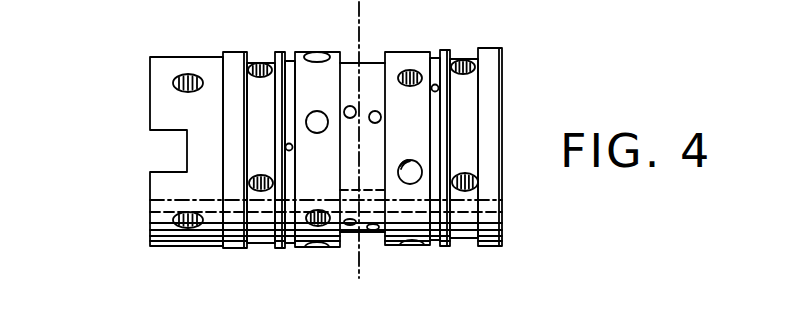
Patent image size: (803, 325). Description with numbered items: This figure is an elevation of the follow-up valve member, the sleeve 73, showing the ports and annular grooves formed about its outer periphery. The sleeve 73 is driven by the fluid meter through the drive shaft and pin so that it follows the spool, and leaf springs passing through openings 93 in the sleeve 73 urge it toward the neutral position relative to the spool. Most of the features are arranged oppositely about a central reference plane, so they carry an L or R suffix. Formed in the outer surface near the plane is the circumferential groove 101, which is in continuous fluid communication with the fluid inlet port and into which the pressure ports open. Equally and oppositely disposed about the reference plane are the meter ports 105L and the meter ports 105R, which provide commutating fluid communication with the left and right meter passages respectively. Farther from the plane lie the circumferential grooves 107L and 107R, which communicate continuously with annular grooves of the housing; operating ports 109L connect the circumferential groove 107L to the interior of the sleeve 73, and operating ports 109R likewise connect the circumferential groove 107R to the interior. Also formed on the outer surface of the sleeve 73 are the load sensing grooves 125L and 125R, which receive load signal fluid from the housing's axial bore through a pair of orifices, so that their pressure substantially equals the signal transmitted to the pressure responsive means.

The sleeve 73 is at (327, 158).
The openings in the sleeve 93 is at (172, 170).
The circumferential groove 101 is at (352, 58).
The meter ports 105L is at (318, 227).
The meter ports 105R is at (408, 70).
The circumferential groove 107L is at (266, 245).
The circumferential groove 107R is at (467, 243).
The operating ports 109L is at (250, 184).
The operating ports 109R is at (466, 191).
The load sensing groove 125L is at (291, 251).
The load sensing groove 125R is at (437, 251).